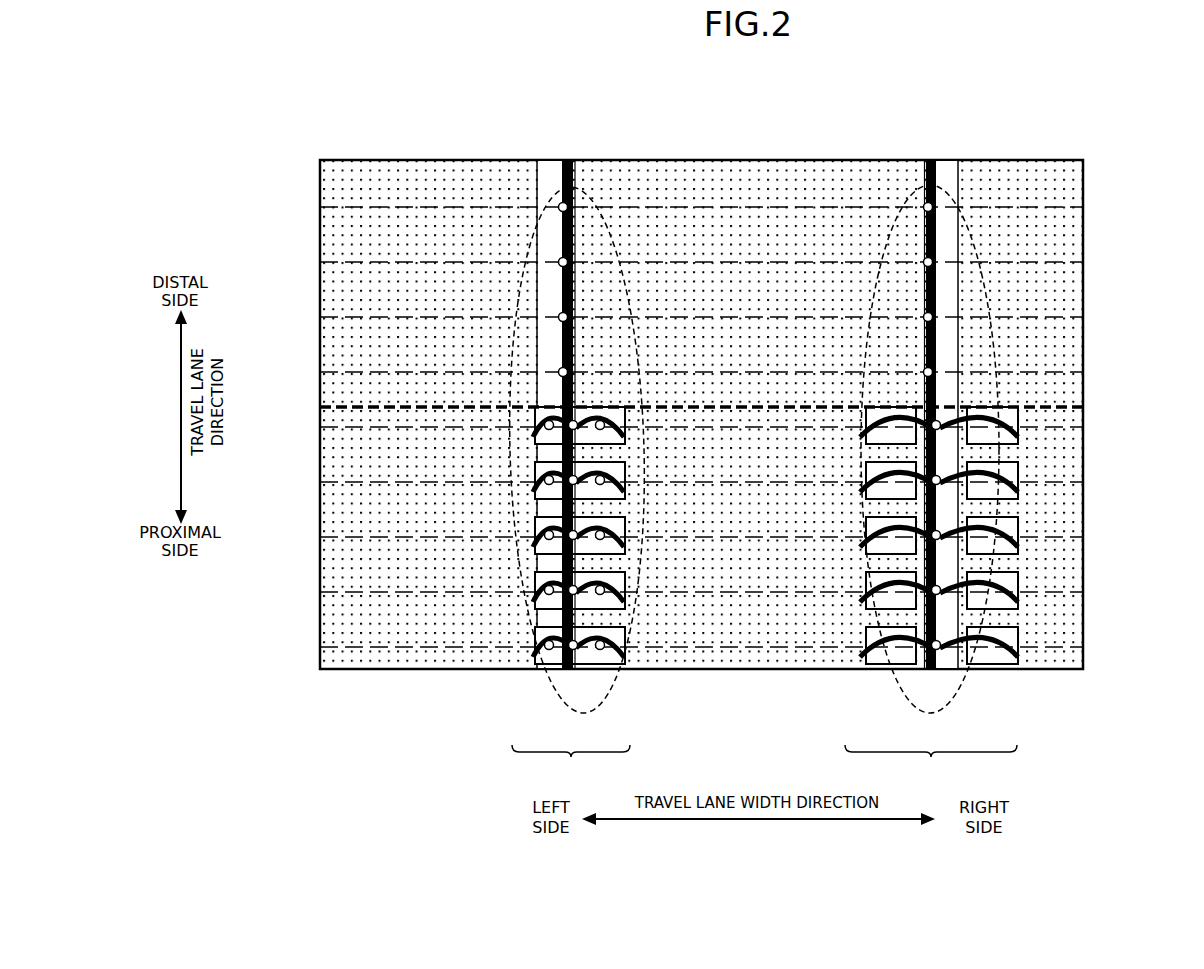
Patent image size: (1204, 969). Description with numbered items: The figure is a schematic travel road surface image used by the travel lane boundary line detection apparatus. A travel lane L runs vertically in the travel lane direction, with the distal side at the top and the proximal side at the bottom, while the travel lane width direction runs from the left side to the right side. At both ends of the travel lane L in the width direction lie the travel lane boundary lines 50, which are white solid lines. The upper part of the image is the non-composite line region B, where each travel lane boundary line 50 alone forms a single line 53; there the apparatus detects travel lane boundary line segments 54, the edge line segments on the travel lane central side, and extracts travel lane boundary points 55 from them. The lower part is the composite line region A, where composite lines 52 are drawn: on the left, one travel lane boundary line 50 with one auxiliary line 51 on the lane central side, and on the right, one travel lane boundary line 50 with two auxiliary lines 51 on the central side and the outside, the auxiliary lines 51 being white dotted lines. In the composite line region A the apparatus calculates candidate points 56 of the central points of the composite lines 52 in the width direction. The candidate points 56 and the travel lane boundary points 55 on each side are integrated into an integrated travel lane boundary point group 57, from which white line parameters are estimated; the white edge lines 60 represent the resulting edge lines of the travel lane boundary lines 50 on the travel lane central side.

The travel lane boundary line 50 is at (550, 662).
The auxiliary line 51 is at (600, 662).
The composite line 52 is at (764, 763).
The single line 53 is at (555, 155).
The travel lane boundary line segment 54 is at (574, 298).
The travel lane boundary point 55 is at (559, 209).
The candidate point 56 is at (598, 410).
The integrated travel lane boundary point group 57 is at (600, 182).
The white edge line 60 is at (574, 341).
The travel lane L is at (756, 178).
The composite line region A is at (360, 503).
The non-composite line region B is at (360, 232).